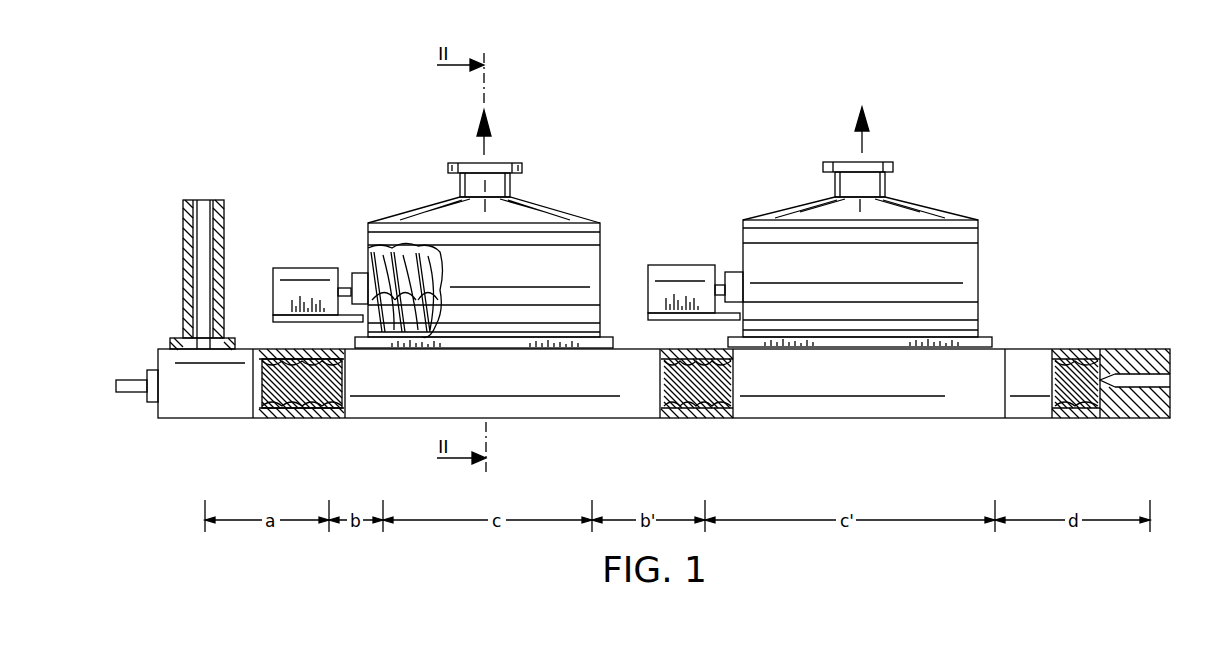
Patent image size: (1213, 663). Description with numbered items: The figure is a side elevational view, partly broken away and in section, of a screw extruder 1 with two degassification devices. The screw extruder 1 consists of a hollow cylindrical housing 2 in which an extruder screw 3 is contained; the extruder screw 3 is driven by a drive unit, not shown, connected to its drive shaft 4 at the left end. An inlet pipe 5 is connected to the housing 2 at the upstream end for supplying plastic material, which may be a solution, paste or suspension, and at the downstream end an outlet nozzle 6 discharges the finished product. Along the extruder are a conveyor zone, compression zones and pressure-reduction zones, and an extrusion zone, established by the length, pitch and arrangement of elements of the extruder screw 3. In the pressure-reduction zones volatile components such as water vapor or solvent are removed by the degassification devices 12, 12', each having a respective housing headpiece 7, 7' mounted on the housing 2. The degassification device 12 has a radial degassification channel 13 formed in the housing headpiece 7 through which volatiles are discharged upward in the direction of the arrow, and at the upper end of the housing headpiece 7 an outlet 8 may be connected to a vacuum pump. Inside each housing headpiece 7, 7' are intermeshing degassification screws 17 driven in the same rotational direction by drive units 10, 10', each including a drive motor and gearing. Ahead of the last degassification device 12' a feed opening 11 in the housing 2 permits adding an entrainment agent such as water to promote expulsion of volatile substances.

The screw extruder 1 is at (229, 429).
The hollow cylindrical housing 2 is at (323, 412).
The extruder screw 3 is at (277, 398).
The drive shaft 4 is at (125, 383).
The inlet pipe 5 is at (190, 258).
The outlet nozzle 6 is at (1160, 380).
The housing headpiece 7 is at (493, 285).
The housing headpiece 7' is at (874, 283).
The outlet 8 is at (499, 164).
The drive unit 10 is at (313, 272).
The drive unit 10' is at (695, 269).
The feed opening 11 is at (700, 415).
The degassification device 12 is at (491, 196).
The degassification device 12' is at (884, 191).
The radial degassification channel 13 is at (462, 194).
The degassification screw 17 is at (370, 250).